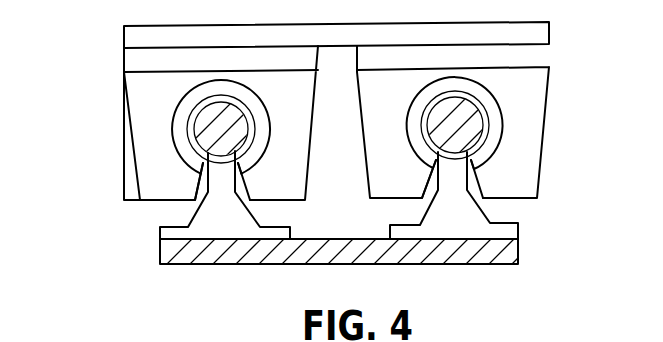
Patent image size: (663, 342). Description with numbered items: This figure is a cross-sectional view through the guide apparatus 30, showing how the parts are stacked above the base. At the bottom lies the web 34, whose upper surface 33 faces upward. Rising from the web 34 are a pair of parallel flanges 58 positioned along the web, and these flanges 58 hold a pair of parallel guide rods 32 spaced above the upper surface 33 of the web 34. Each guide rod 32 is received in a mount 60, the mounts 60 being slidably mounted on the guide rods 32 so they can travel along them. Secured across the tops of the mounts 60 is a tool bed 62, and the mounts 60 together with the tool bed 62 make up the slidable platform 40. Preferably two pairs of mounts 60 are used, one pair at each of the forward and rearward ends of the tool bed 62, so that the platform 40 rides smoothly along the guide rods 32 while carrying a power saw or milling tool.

The guide apparatus 30 is at (112, 242).
The guide rod 32 is at (440, 115).
The upper surface 33 is at (338, 240).
The web 34 is at (508, 247).
The slidable platform 40 is at (100, 92).
The flange 58 is at (228, 222).
The mount 60 is at (372, 165).
The tool bed 62 is at (542, 28).